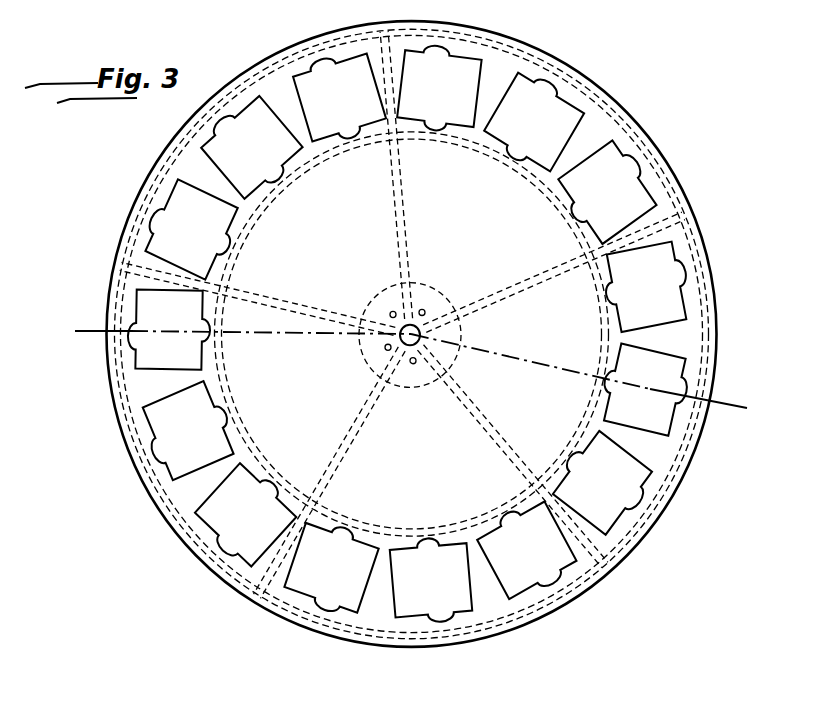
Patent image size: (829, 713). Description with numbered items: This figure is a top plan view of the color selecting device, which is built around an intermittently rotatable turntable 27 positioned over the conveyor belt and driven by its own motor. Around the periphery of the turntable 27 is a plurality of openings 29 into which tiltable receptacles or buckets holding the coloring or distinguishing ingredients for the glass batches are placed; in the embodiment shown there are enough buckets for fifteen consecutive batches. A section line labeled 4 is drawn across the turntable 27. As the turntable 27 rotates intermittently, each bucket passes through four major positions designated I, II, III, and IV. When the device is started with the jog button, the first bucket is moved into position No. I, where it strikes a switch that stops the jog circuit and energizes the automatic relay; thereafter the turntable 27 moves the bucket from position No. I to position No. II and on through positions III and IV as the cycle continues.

The turntable 27 is at (713, 304).
The openings 29 is at (642, 483).
The section line 4- 4 is at (75, 331).
The position No. I is at (330, 613).
The position No. II is at (389, 620).
The position No. III is at (450, 620).
The position No. IV is at (503, 605).